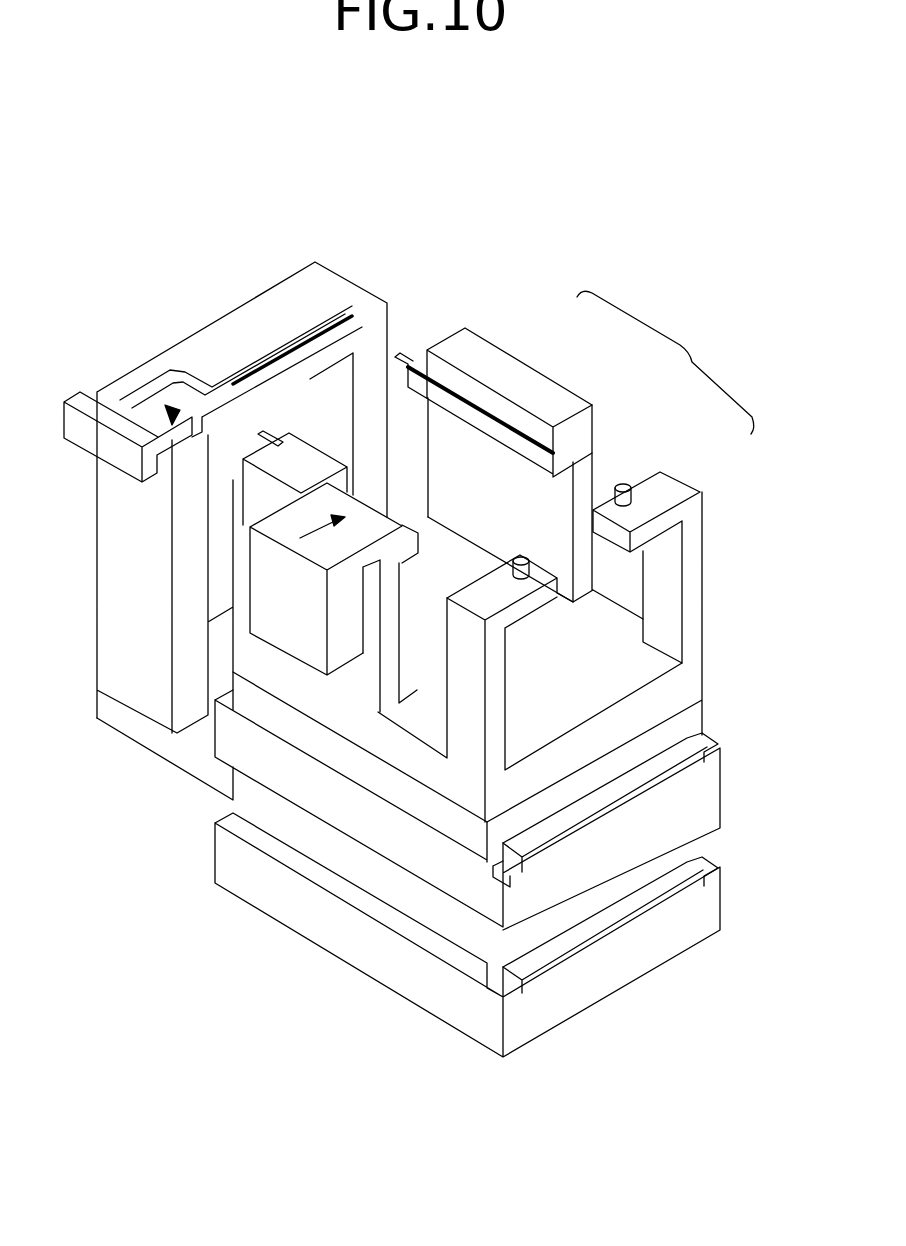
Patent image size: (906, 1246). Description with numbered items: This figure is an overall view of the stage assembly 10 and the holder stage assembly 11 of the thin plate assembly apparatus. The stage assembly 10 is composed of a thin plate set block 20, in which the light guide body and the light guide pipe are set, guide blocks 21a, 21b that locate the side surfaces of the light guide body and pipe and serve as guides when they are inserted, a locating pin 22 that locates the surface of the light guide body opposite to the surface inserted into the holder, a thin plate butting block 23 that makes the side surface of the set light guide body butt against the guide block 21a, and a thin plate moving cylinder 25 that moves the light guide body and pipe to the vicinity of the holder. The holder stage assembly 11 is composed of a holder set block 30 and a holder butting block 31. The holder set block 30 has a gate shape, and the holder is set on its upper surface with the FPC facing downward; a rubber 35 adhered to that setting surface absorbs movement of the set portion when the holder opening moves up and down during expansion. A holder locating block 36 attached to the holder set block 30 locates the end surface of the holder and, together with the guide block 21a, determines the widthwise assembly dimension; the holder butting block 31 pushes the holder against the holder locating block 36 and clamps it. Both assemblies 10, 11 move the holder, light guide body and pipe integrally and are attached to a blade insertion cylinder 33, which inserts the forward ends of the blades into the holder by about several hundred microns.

The stage assembly 10 is at (665, 362).
The holder stage assembly 11 is at (283, 254).
The thin plate set block 20 is at (703, 618).
The guide block 21a is at (525, 372).
The guide block 21b is at (258, 478).
The locating pin 22 is at (630, 498).
The thin plate butting block 23 is at (292, 596).
The thin plate moving cylinder 25 is at (720, 795).
The holder set block 30 is at (247, 292).
The holder butting block 31 is at (122, 456).
The blade insertion cylinder 33 is at (683, 951).
The rubber 35 is at (300, 340).
The holder locating block 36 is at (368, 305).